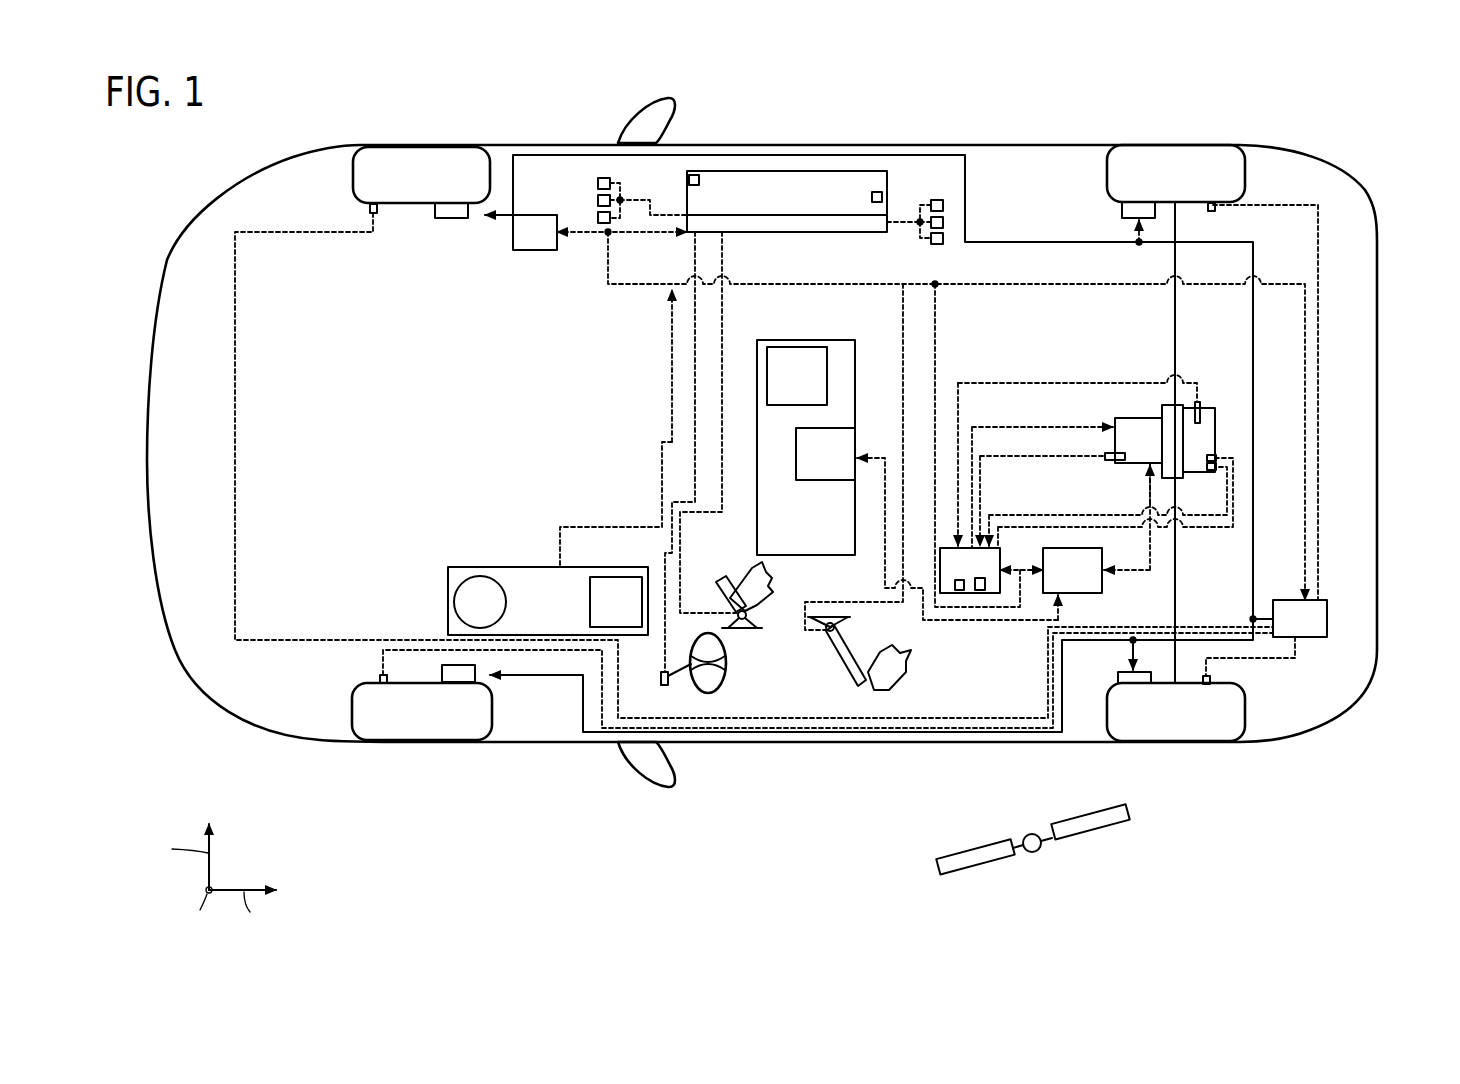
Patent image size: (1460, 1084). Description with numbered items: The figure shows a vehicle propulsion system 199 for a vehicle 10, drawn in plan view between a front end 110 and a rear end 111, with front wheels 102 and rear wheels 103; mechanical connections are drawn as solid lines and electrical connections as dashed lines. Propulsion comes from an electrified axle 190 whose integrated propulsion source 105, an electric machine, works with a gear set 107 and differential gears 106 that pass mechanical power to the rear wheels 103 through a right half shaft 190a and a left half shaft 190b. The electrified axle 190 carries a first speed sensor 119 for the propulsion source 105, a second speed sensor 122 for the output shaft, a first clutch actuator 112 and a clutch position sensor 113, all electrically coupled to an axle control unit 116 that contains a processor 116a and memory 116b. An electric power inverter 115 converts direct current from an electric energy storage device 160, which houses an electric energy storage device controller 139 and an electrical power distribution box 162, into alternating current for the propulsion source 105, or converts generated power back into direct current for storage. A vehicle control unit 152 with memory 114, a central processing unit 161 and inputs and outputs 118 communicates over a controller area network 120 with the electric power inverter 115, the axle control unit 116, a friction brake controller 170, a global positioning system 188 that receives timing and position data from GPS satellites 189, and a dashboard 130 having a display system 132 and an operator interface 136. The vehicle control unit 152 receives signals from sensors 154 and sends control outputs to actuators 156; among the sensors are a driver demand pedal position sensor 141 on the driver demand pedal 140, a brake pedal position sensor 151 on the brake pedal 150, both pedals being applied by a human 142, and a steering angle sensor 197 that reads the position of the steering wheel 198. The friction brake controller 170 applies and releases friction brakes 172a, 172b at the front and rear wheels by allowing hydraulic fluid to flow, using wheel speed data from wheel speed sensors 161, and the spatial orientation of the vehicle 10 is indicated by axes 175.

The vehicle 10 is at (993, 143).
The front wheels 102 is at (428, 147).
The rear wheels 103 is at (1176, 146).
The propulsion source 105 is at (1105, 461).
The differential gears 106 is at (1173, 410).
The gear set 107 is at (1208, 430).
The front end 110 is at (122, 236).
The rear end 111 is at (1425, 183).
The first clutch actuator 112 is at (1210, 470).
The clutch position sensor 113 is at (1213, 457).
The memory 114 is at (688, 180).
The electric power inverter 115 is at (1072, 570).
The axle control unit 116 is at (977, 600).
The processor 116a is at (960, 592).
The memory 116b is at (980, 592).
The inputs and outputs 118 is at (832, 236).
The first speed sensor 119 is at (1123, 462).
The controller area network 120 is at (777, 286).
The second speed sensor 122 is at (1200, 410).
The dashboard 130 is at (548, 586).
The display system 132 is at (493, 611).
The operator interface 136 is at (629, 611).
The electric energy storage device controller 139 is at (797, 376).
The driver demand pedal 140 is at (737, 587).
The driver demand pedal position sensor 141 is at (748, 616).
The human 142 is at (758, 580).
The brake pedal 150 is at (816, 661).
The brake pedal position sensor 151 is at (825, 630).
The vehicle control unit 152 is at (762, 213).
The sensors 154 is at (592, 206).
The actuators 156 is at (955, 233).
The electric energy storage device 160 is at (806, 447).
The wheel speed sensor 161 is at (367, 205).
The electrical power distribution box 162 is at (825, 454).
The friction brake controller 170 is at (908, 443).
The friction brake 172a is at (445, 222).
The friction brake 172b is at (1120, 210).
The axes 175 is at (235, 838).
The global positioning system 188 is at (521, 232).
The GPS satellite 189 is at (1093, 842).
The electrified axle 190 is at (1153, 406).
The right half shaft 190a is at (1172, 332).
The left half shaft 190b is at (1175, 598).
The steering angle sensor 197 is at (660, 683).
The steering wheel 198 is at (720, 678).
The vehicle propulsion system 199 is at (927, 112).